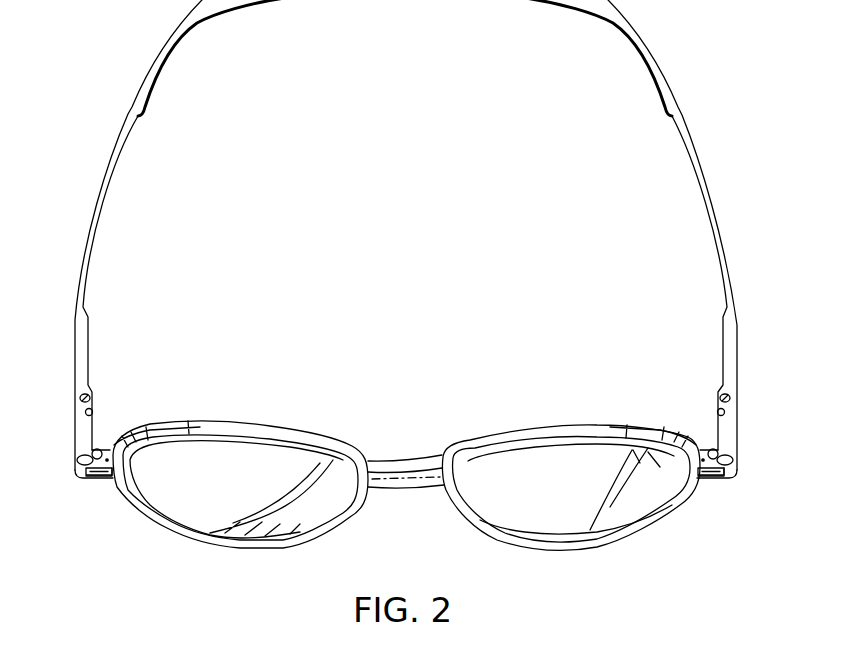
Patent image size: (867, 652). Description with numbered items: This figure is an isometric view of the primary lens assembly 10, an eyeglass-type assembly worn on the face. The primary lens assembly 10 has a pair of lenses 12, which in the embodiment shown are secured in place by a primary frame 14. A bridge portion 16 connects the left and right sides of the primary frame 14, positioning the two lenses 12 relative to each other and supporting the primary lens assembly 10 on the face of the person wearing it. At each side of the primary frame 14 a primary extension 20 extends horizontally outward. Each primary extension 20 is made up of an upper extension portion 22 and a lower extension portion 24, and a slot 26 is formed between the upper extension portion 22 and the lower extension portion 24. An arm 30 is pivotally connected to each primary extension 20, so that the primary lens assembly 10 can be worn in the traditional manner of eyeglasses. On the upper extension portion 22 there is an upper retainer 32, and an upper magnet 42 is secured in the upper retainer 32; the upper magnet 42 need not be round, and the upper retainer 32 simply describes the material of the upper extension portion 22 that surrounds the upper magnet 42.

The primary lens assembly 10 is at (401, 294).
The lenses 12 is at (195, 497).
The primary frame 14 is at (228, 432).
The bridge portion 16 is at (413, 472).
The primary extension 20 is at (72, 452).
The upper extension portion 22 is at (78, 462).
The lower extension portion 24 is at (97, 480).
The slot 26 is at (88, 477).
The arm 30 is at (91, 209).
The upper retainer 32 is at (108, 442).
The upper magnet 42 is at (98, 448).